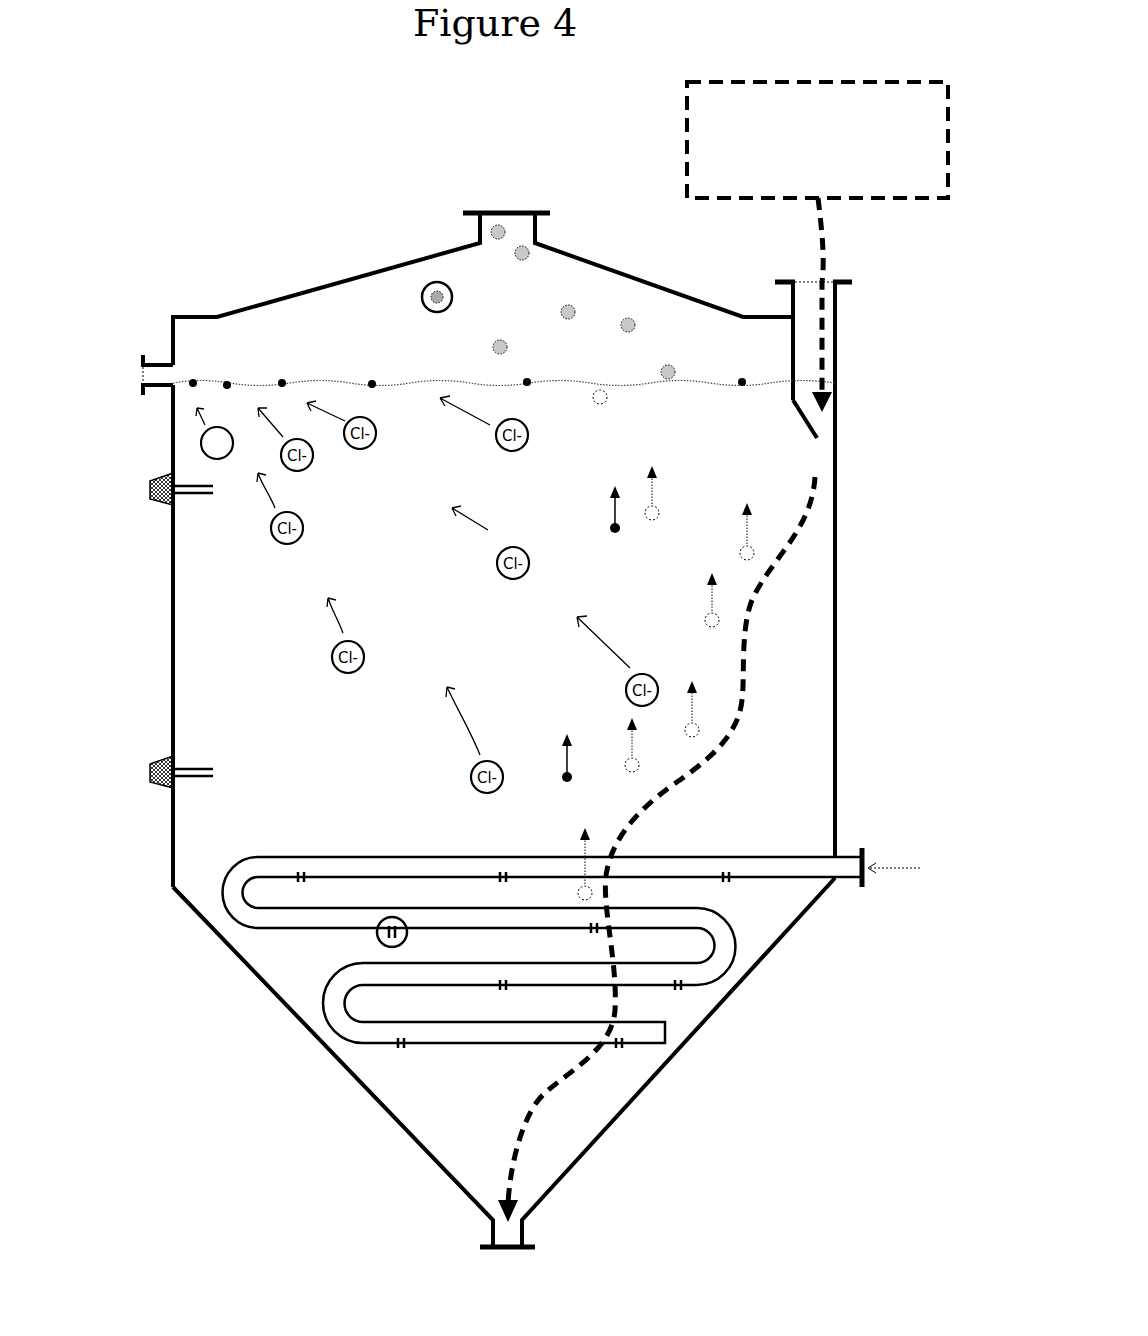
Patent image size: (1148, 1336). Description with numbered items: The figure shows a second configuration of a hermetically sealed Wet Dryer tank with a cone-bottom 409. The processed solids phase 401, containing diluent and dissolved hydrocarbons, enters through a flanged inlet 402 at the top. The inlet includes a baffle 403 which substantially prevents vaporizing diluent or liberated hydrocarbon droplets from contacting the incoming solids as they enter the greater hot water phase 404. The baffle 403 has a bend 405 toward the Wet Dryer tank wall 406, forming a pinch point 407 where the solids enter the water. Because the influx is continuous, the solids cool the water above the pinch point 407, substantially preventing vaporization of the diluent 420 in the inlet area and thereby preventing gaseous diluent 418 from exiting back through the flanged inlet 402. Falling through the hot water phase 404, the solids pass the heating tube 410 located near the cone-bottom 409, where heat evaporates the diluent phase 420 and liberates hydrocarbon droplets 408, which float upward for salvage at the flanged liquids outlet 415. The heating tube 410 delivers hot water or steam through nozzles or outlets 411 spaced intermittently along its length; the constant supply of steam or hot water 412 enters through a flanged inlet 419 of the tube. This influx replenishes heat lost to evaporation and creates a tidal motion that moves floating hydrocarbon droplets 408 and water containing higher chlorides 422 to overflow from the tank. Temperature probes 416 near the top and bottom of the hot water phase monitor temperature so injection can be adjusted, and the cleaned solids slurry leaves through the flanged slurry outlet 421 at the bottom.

The processed solids phase 401 is at (687, 128).
The flanged inlet 402 is at (852, 282).
The baffle 403 is at (790, 345).
The greater hot water phase 404 is at (240, 640).
The bend 405 is at (805, 425).
The Wet Dryer tank wall 406 is at (835, 577).
The pinch point 407 is at (822, 423).
The hydrocarbon droplets 408 is at (227, 383).
The cone-bottom 409 is at (385, 1108).
The heating tube 410 is at (235, 888).
The nozzles or outlets 411 is at (380, 940).
The supply of steam or hot water 412 is at (917, 869).
The flanged liquids outlet 415 is at (143, 360).
The temperature probes 416 is at (150, 490).
The gaseous diluent 418 is at (435, 288).
The flanged inlet of the heating tube 419 is at (865, 887).
The diluent phase 420 is at (640, 768).
The flanged slurry outlet 421 is at (535, 1247).
The water containing higher chlorides 422 is at (200, 443).